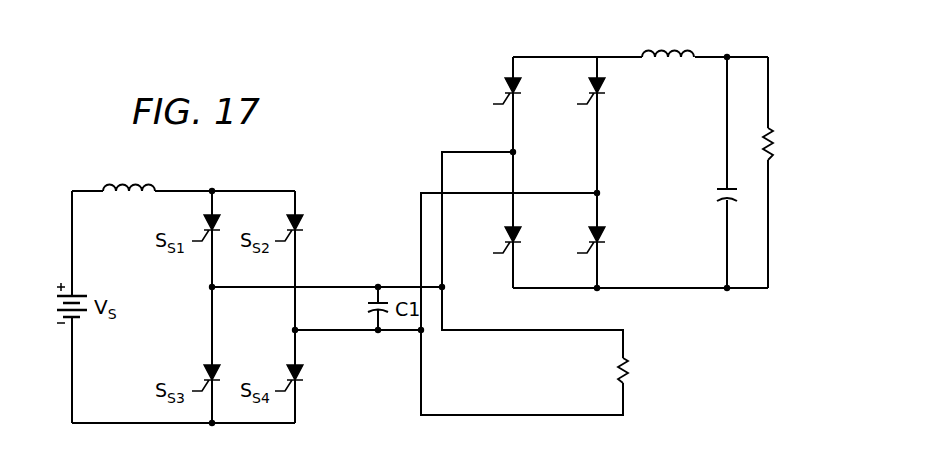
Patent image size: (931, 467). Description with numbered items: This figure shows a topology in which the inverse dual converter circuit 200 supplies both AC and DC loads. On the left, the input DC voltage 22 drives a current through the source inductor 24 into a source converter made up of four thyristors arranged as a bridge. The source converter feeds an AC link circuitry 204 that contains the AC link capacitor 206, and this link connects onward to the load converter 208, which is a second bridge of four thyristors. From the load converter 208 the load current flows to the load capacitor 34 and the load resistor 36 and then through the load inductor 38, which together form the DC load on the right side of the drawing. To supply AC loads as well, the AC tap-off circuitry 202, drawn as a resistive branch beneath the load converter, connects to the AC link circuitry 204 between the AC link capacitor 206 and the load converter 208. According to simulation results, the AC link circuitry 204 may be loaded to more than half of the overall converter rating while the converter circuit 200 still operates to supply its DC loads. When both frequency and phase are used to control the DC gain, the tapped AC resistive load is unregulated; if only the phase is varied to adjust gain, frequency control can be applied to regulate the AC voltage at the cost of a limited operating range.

The input DC voltage 22 is at (50, 318).
The source inductor 24 is at (94, 176).
The load capacitor 34 is at (690, 212).
The load resistor 36 is at (778, 158).
The load inductor 38 is at (707, 40).
The inverse dual converter circuit 200 is at (788, 88).
The AC tap-off circuitry 202 is at (640, 353).
The AC link circuitry 204 is at (373, 338).
The AC link capacitor 206 is at (369, 308).
The load converter 208 is at (616, 113).